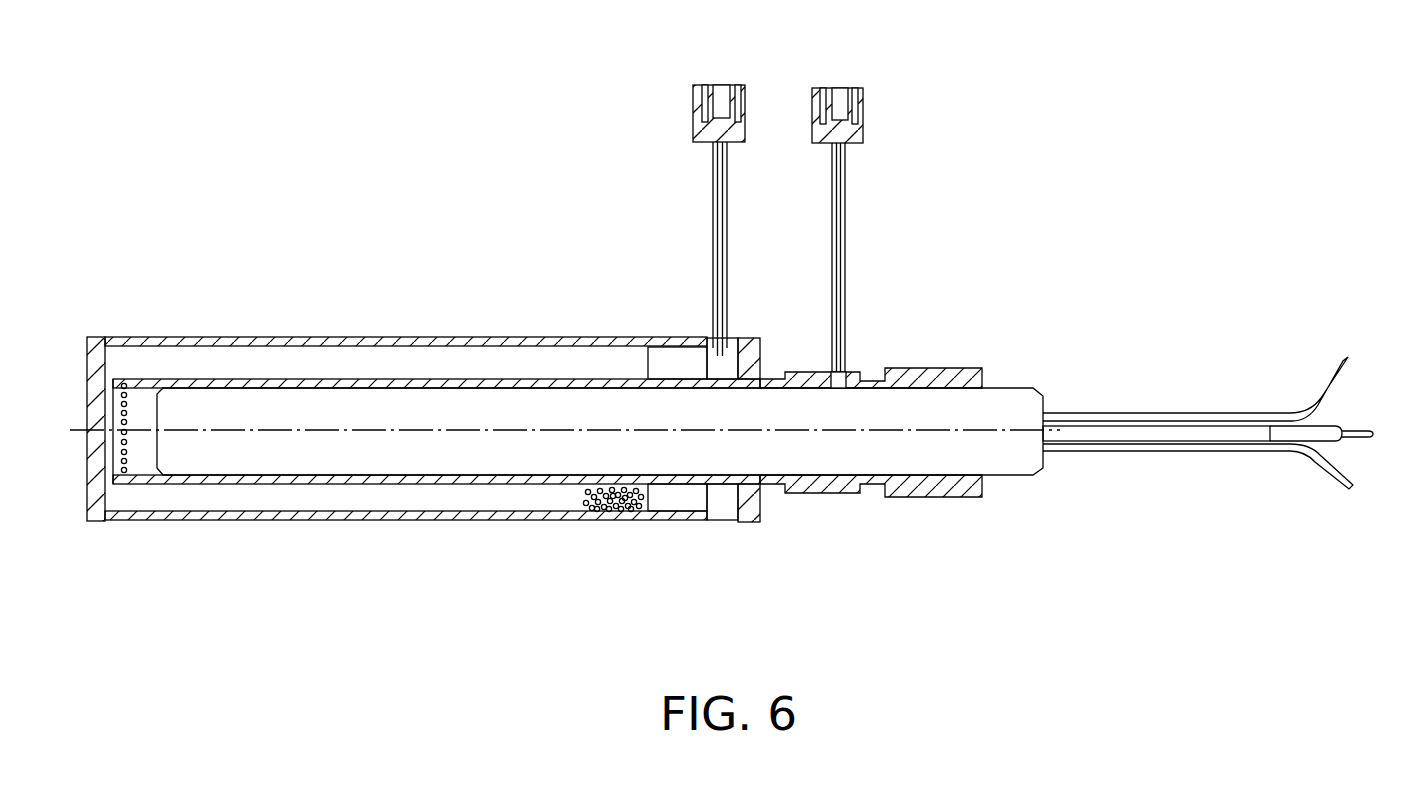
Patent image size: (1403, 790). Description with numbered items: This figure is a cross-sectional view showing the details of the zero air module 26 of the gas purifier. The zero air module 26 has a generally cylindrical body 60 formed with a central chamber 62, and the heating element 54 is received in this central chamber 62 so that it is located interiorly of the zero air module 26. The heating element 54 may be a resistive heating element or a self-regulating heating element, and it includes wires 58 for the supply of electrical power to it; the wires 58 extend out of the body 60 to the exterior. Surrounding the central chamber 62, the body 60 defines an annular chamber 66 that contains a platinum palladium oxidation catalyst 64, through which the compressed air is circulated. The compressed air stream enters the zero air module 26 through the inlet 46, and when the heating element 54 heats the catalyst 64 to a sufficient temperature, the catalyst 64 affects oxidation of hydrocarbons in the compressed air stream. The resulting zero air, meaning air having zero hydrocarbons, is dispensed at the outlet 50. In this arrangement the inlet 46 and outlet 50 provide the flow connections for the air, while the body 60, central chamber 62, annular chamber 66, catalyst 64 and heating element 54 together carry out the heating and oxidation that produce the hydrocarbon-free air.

The zero air module 26 is at (364, 157).
The generally cylindrical body 60 is at (279, 336).
The central chamber 62 is at (390, 377).
The heating element 54 is at (580, 410).
The platinum palladium oxidation catalyst 64 is at (581, 498).
The annular chamber 66 is at (322, 498).
The outlet 50 is at (715, 84).
The inlet 46 is at (838, 87).
The wires 58 is at (1225, 405).